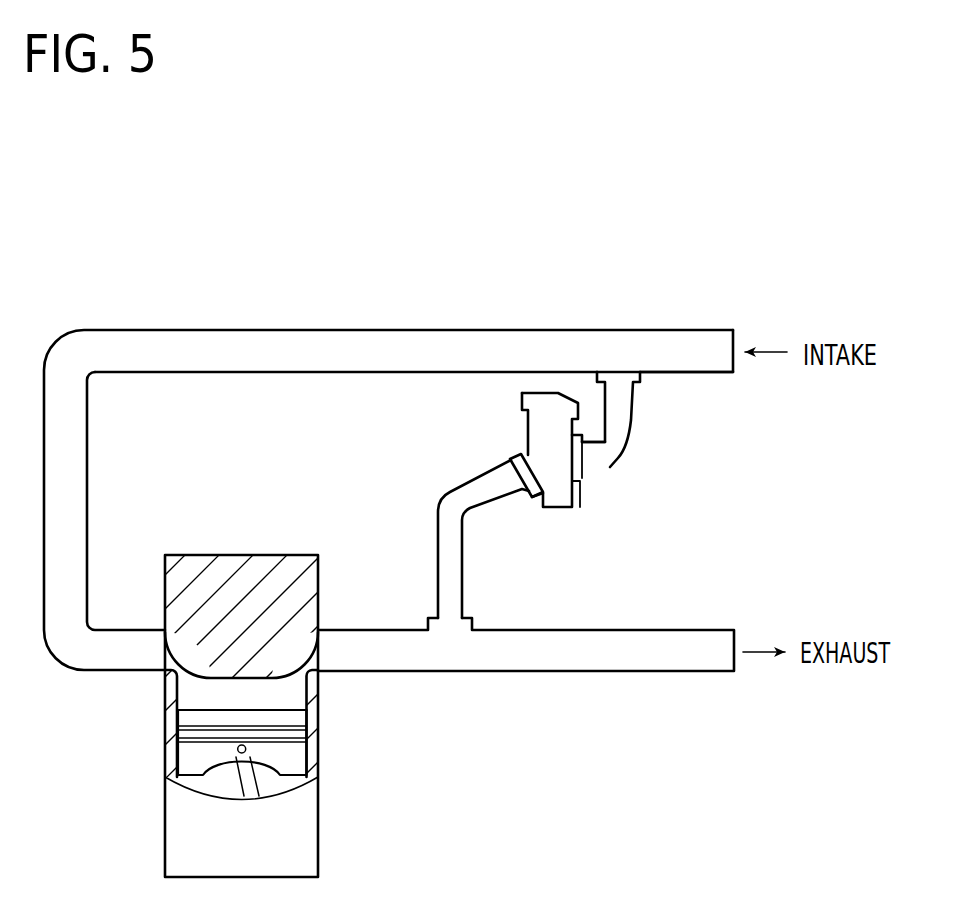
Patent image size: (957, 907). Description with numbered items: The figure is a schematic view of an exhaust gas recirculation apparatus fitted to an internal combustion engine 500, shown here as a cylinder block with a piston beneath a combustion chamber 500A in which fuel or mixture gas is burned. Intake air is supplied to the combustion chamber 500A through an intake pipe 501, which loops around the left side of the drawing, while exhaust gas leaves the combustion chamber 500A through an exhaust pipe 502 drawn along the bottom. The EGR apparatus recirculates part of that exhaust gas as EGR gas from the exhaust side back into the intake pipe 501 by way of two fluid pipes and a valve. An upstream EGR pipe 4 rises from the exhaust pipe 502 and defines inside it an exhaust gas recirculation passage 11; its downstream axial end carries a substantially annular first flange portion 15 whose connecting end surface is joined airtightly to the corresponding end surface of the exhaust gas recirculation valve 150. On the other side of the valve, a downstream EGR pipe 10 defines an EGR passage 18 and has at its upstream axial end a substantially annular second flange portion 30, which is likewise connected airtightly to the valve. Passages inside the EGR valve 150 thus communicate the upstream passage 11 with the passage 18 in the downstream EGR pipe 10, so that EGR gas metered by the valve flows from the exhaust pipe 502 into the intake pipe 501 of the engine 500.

The upstream EGR pipe 4 is at (507, 474).
The downstream EGR pipe 10 is at (582, 470).
The exhaust gas recirculation passage 11 is at (515, 480).
The first flange portion 15 is at (535, 497).
The EGR passage 18 is at (583, 458).
The second flange portion 30 is at (582, 477).
The exhaust gas recirculation valve 150 is at (593, 504).
The internal combustion engine 500 is at (330, 851).
The combustion chamber 500A is at (280, 698).
The intake pipe 501 is at (95, 672).
The exhaust pipe 502 is at (390, 672).